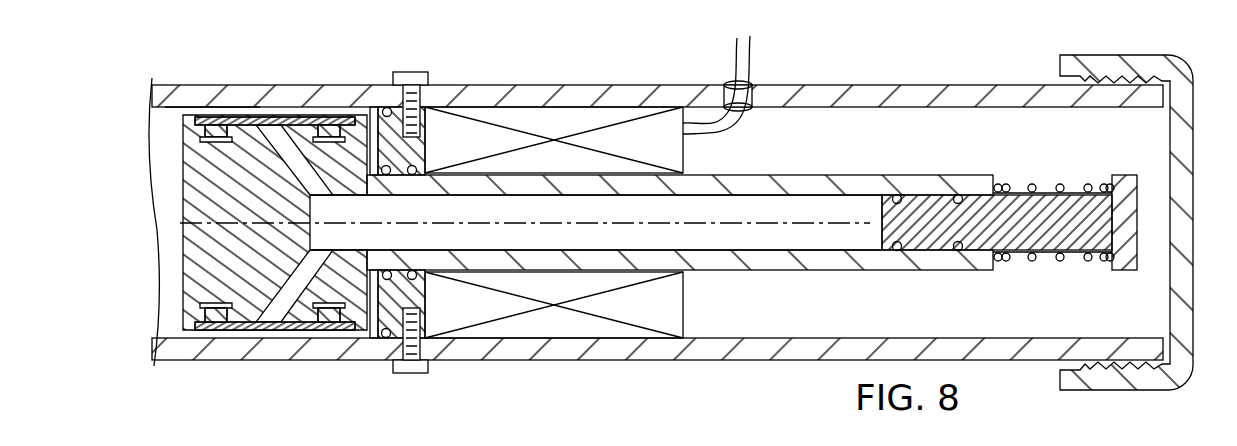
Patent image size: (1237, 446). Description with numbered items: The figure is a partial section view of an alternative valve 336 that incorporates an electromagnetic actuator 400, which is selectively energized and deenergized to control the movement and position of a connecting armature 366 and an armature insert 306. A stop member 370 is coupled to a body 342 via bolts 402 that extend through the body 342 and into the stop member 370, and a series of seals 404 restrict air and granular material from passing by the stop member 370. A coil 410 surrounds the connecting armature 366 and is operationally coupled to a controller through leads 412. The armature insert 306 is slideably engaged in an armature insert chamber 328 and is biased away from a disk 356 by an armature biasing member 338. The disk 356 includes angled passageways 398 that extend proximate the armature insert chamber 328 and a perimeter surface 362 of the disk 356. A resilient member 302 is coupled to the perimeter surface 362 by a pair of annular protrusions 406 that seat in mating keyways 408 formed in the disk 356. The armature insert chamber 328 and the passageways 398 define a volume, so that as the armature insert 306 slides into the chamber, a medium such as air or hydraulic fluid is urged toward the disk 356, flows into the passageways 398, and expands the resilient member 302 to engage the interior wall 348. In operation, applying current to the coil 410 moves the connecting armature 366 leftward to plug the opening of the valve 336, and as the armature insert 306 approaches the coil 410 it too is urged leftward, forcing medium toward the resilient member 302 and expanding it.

The valve 336 is at (175, 52).
The interior wall 348 is at (170, 109).
The body 342 is at (926, 75).
The disk 356 is at (180, 232).
The angled passageways 398 is at (311, 266).
The resilient member 302 is at (240, 112).
The perimeter surface 362 is at (228, 143).
The keyways 408 is at (208, 300).
The annular protrusions 406 is at (202, 322).
The armature insert chamber 328 is at (630, 249).
The connecting armature 366 is at (840, 168).
The armature insert 306 is at (1122, 172).
The armature biasing member 338 is at (1098, 264).
The electromagnetic actuator 400 is at (597, 76).
The coil 410 is at (688, 298).
The stop member 370 is at (368, 342).
The bolts 402 is at (421, 72).
The seals 404 is at (384, 110).
The leads 412 is at (751, 56).